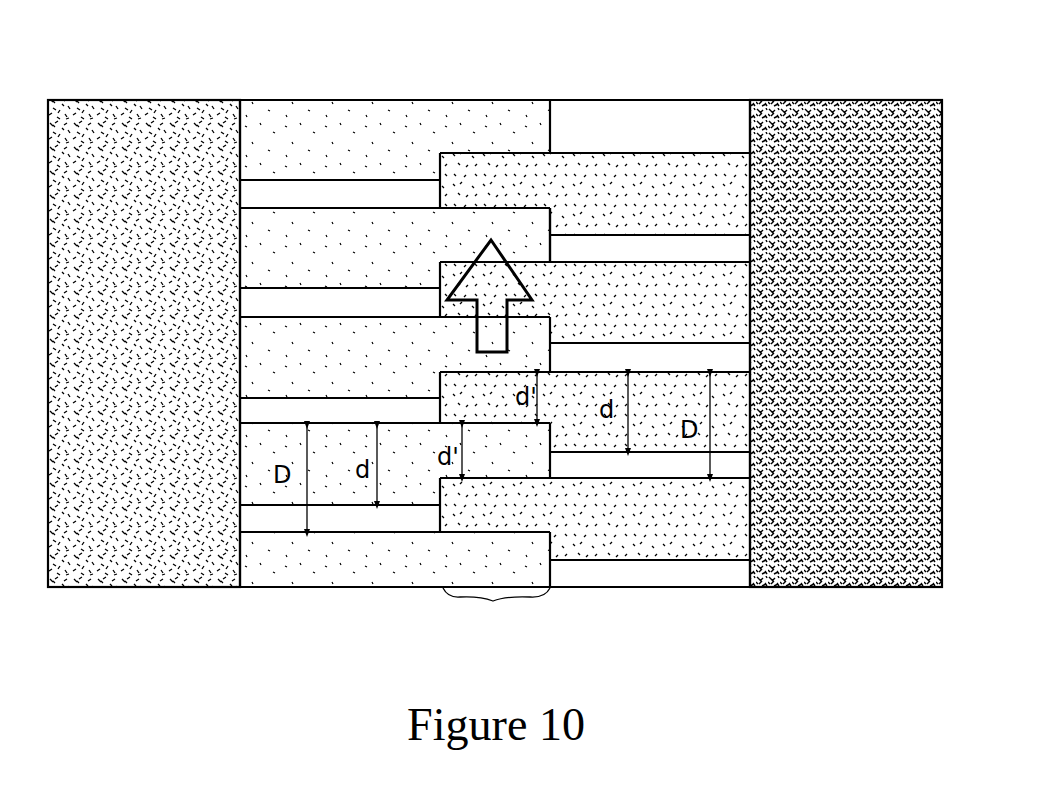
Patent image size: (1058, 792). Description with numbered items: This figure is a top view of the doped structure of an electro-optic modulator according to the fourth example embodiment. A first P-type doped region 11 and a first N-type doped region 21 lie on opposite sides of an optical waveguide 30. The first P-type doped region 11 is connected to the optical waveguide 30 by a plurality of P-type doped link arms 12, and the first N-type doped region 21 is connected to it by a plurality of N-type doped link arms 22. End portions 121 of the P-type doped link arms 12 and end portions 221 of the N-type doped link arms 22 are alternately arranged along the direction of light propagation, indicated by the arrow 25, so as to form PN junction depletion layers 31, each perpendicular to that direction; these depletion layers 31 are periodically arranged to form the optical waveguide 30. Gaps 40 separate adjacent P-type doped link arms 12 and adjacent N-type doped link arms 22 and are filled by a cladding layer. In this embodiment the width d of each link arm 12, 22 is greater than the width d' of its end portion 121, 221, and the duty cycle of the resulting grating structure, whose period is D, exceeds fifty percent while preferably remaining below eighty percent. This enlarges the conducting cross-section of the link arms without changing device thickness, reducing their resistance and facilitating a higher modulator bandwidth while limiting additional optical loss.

The first P-type doped region 11 is at (150, 128).
The P-type doped link arm 12 is at (360, 128).
The end portion of P-type doped link arm 121 is at (495, 118).
The first N-type doped region 21 is at (860, 125).
The N-type doped link arm 22 is at (665, 165).
The end portion of N-type doped link arm 221 is at (512, 165).
The arrow 25 is at (478, 325).
The optical waveguide 30 is at (496, 614).
The PN junction depletion layer 31 is at (465, 152).
The gap 40 is at (288, 180).